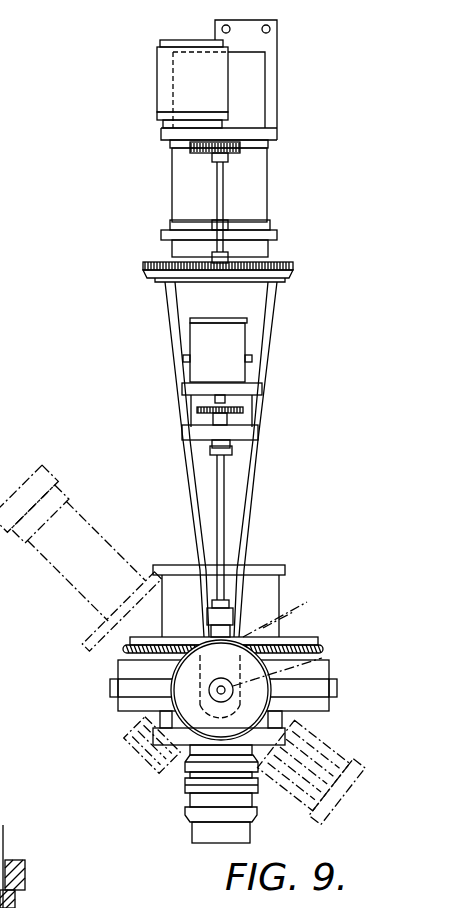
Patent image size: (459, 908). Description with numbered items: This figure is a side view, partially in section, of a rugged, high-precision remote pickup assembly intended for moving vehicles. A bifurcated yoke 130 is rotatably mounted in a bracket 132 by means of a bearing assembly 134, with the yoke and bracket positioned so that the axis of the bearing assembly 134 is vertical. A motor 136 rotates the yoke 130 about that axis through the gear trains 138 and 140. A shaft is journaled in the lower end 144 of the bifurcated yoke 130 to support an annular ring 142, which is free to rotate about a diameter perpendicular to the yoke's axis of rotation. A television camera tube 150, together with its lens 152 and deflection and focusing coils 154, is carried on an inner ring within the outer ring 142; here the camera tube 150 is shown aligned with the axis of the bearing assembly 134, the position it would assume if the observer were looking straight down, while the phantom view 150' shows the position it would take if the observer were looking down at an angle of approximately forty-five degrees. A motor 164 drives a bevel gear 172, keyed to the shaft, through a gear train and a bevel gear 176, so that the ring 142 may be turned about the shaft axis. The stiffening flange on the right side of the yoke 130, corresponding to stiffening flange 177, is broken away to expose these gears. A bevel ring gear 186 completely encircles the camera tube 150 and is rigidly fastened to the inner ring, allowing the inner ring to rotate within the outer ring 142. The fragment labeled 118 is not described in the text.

The bracket 132 is at (268, 43).
The motor 136 is at (162, 62).
The gear train 138 is at (237, 150).
The bearing assembly 134 is at (255, 196).
The gear train 140 is at (225, 276).
The bifurcated yoke 130 is at (237, 459).
The motor 164 is at (232, 350).
The stiffening flange 177 is at (186, 472).
The television camera tube 150 is at (268, 524).
The deflection and focusing coils 154 is at (267, 588).
The bevel gear 176 is at (228, 637).
The bevel ring gear 186 is at (282, 660).
The lower end of bifurcated yoke 144 is at (322, 658).
The bevel gear 172 is at (252, 703).
The annular ring 142 is at (123, 703).
The lens 152 is at (185, 793).
The phantom view of camera tube 150' is at (81, 556).
The frame member 118 is at (7, 686).